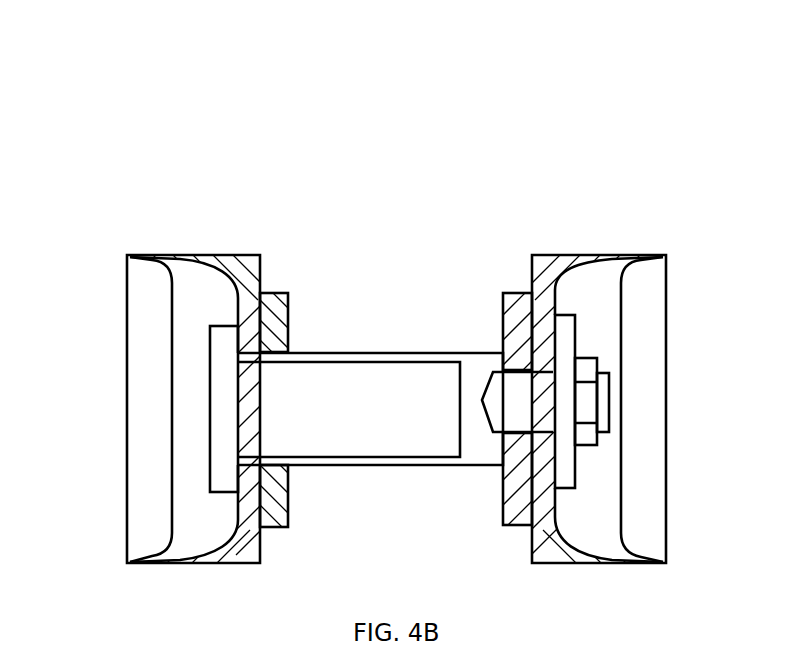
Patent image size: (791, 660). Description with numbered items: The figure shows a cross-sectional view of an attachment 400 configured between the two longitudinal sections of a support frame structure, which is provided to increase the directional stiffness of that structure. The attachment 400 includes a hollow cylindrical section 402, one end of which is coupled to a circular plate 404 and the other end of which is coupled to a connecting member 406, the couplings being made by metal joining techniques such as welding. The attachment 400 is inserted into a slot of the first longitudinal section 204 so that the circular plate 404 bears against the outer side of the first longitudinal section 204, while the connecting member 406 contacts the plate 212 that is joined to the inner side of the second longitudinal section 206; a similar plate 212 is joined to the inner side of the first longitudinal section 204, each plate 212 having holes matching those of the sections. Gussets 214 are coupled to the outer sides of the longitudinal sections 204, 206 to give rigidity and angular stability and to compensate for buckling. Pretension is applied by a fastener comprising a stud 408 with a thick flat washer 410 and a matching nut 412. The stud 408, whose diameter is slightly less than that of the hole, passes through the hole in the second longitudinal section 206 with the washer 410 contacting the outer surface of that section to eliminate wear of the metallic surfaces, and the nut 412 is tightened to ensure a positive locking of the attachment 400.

The first longitudinal section 204 is at (124, 246).
The second longitudinal section 206 is at (663, 246).
The plate 212 is at (289, 298).
The gusset 214 is at (148, 392).
The attachment 400 is at (386, 336).
The hollow cylindrical section 402 is at (370, 440).
The circular plate 404 is at (222, 477).
The connecting member 406 is at (483, 368).
The stud 408 is at (603, 420).
The thick flat washer 410 is at (565, 345).
The nut 412 is at (587, 400).